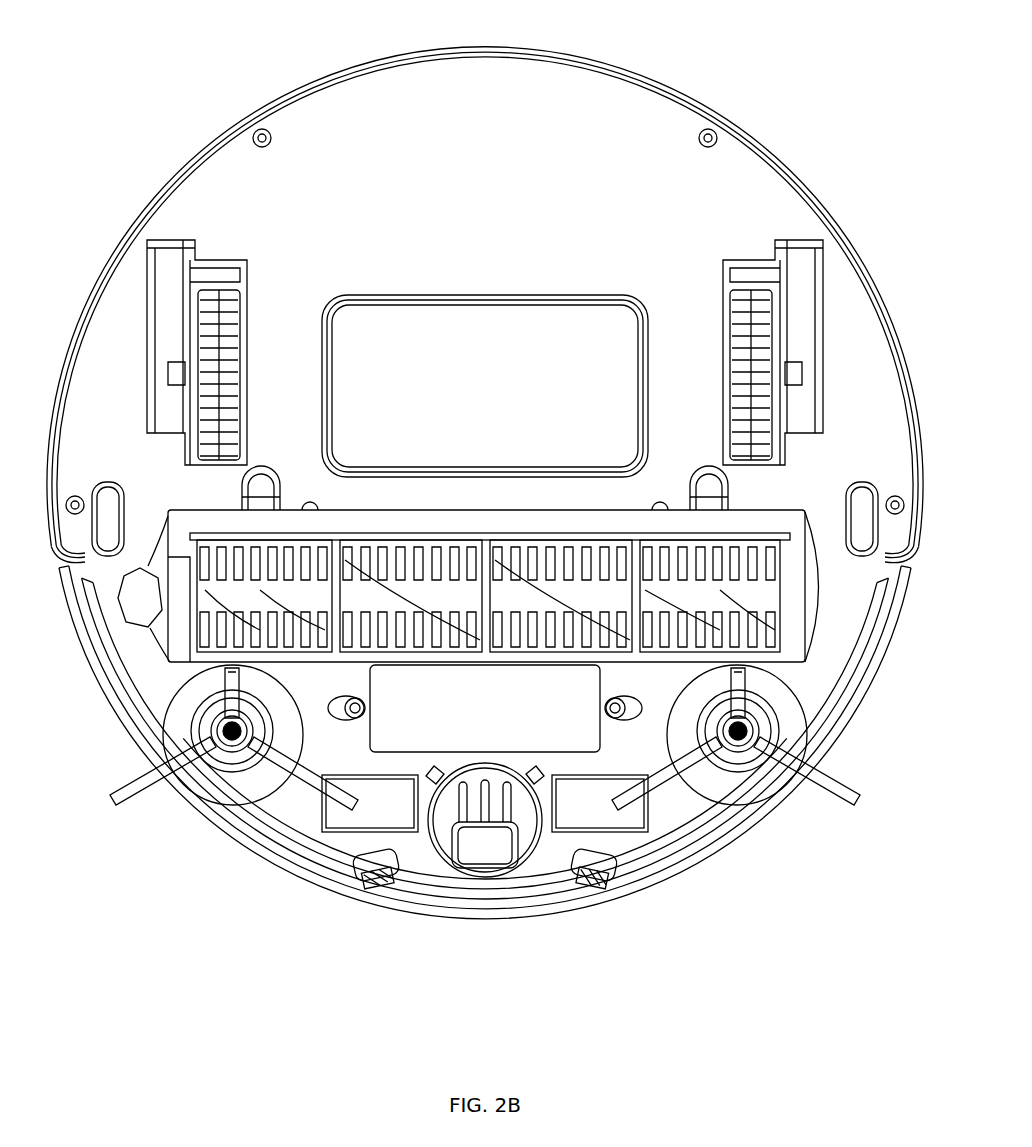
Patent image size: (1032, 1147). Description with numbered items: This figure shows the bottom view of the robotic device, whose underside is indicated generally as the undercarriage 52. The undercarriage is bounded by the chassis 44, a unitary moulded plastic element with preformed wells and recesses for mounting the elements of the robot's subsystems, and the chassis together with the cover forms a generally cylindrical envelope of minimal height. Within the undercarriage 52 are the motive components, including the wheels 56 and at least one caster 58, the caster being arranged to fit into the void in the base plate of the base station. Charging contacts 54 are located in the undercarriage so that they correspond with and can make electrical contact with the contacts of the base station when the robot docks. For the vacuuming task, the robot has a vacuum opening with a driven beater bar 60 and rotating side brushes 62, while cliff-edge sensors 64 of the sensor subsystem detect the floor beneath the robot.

The chassis 44 is at (562, 132).
The undercarriage 52 is at (150, 78).
The charging contacts 54 is at (358, 822).
The wheels 56 is at (215, 332).
The caster 58 is at (488, 848).
The driven beater bar 60 is at (267, 605).
The rotating side brushes 62 is at (225, 745).
The cliff-edge sensors 64 is at (110, 535).